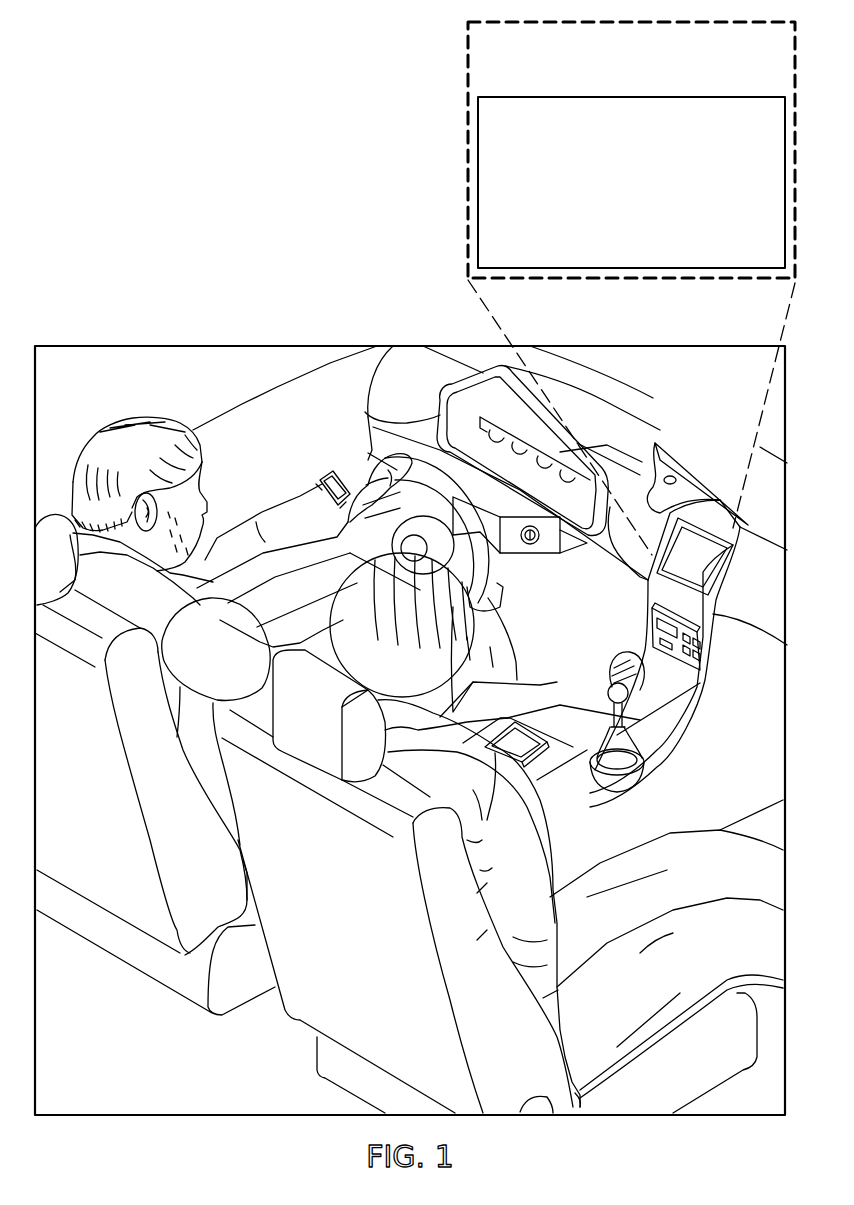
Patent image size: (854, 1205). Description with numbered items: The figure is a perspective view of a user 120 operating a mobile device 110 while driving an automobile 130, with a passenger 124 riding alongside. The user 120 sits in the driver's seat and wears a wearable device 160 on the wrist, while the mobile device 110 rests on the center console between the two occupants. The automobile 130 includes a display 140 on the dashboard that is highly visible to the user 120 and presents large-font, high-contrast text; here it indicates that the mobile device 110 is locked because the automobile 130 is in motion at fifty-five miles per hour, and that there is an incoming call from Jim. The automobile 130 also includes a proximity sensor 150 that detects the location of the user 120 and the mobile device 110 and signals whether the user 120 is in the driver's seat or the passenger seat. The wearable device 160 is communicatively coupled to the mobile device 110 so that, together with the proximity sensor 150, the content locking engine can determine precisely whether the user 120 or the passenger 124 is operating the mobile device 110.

The mobile device 110 is at (527, 735).
The user 120 is at (105, 428).
The passenger 124 is at (550, 862).
The automobile 130 is at (195, 428).
The display 140 is at (632, 96).
The proximity sensor 150 is at (677, 473).
The wearable device 160 is at (327, 477).